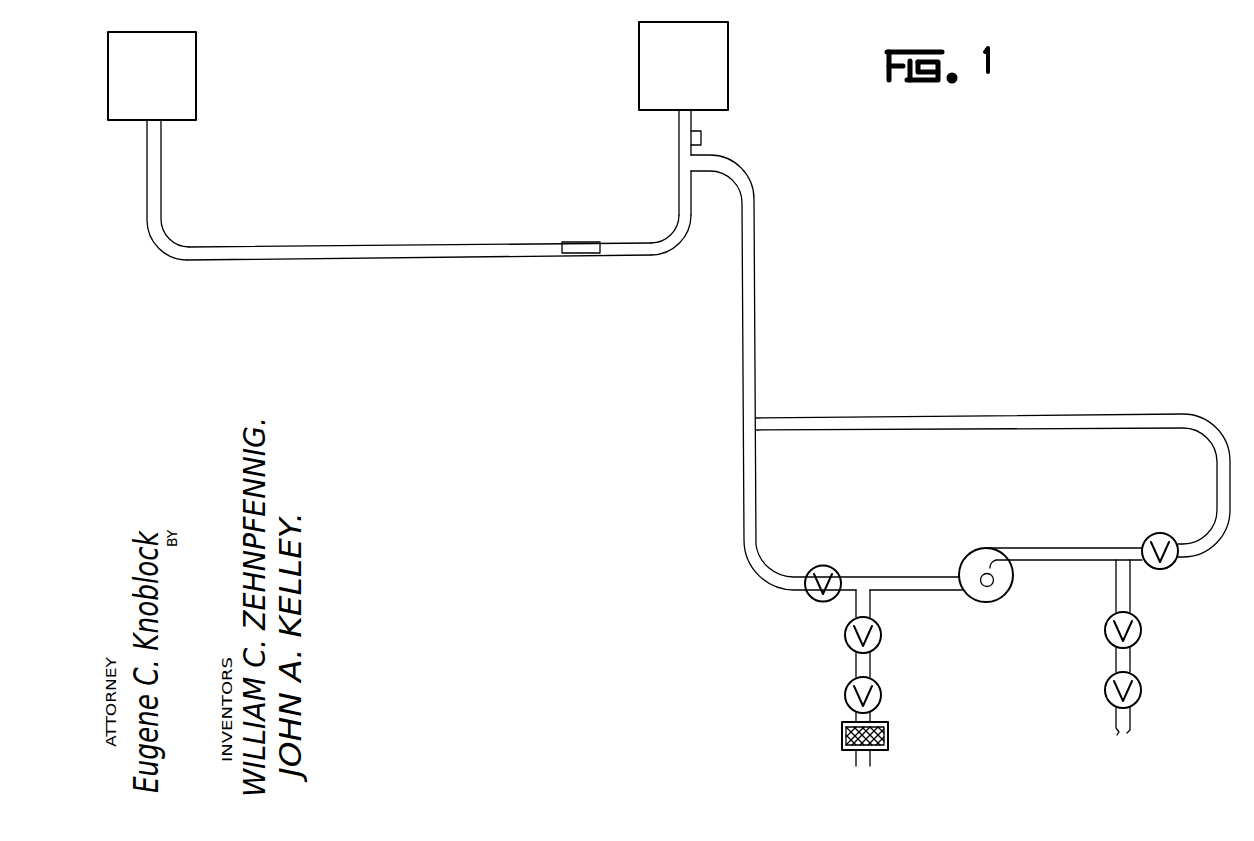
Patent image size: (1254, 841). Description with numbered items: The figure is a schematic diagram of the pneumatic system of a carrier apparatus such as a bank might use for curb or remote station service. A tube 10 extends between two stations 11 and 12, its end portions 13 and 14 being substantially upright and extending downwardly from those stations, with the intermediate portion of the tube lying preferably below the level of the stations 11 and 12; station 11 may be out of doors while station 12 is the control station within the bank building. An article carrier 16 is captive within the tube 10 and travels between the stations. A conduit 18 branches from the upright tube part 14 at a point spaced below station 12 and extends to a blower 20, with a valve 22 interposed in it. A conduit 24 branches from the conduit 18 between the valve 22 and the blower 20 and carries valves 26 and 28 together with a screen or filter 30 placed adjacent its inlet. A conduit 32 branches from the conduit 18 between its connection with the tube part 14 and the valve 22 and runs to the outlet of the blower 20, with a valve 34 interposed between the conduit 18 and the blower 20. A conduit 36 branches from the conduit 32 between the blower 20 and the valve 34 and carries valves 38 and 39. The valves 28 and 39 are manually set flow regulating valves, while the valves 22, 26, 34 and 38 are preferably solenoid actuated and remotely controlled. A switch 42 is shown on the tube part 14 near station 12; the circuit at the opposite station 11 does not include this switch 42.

The tube 10 is at (437, 253).
The station 11 is at (178, 63).
The station 12 is at (710, 63).
The end portion of tube 13 is at (150, 165).
The end portion of tube 14 is at (683, 180).
The article carrier 16 is at (573, 255).
The conduit 18 is at (748, 258).
The blower 20 is at (982, 598).
The valve 22 is at (823, 568).
The conduit 24 is at (870, 607).
The valve 26 is at (878, 642).
The valve 28 is at (883, 695).
The screen or filter 30 is at (888, 735).
The conduit 32 is at (925, 418).
The valve 34 is at (1159, 533).
The conduit 36 is at (1116, 589).
The valve 38 is at (1106, 632).
The valve 39 is at (1106, 692).
The switch 42 is at (702, 137).